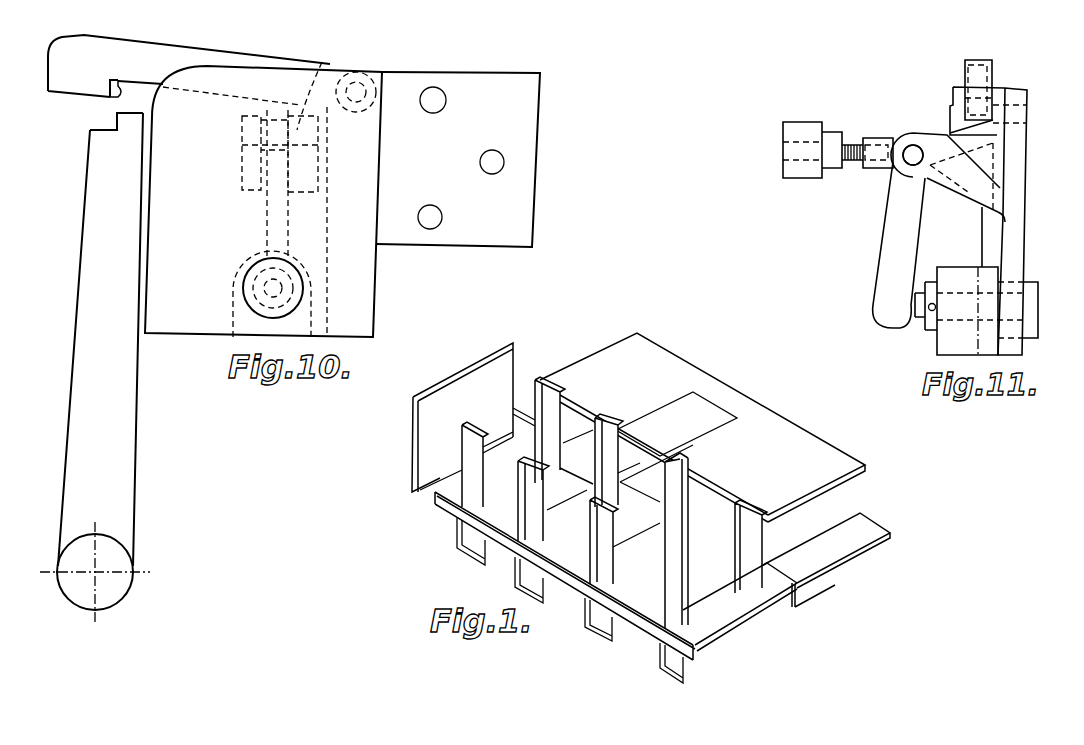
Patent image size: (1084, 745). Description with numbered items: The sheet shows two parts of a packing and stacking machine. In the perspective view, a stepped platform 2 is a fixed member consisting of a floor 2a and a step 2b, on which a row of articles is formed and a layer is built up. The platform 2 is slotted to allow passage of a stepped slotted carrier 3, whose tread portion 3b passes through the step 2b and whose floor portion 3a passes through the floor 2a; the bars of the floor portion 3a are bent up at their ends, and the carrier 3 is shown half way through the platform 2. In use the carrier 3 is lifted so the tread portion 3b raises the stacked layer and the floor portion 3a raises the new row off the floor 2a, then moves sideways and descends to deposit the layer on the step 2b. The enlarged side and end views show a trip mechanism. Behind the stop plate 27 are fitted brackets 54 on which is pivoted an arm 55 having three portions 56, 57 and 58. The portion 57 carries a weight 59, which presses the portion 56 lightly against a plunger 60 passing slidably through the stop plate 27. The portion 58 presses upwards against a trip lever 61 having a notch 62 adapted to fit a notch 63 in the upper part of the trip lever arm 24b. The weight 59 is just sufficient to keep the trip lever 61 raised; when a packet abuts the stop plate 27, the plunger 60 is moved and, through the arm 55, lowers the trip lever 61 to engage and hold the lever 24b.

In FIG. 10, the trip lever 61 is at (166, 53).
In FIG. 11, the trip lever 61 is at (993, 61).
In FIG. 10, the notch 62 is at (110, 96).
In FIG. 10, the notch 63 is at (113, 128).
In FIG. 10, the stop plate 27 is at (375, 290).
In FIG. 11, the stop plate 27 is at (1026, 152).
In FIG. 1, the stop plate 27 is at (468, 368).
In FIG. 10, the portion of arm 58 is at (330, 70).
In FIG. 11, the portion of arm 58 is at (1023, 183).
In FIG. 10, the brackets 54 is at (242, 190).
In FIG. 11, the brackets 54 is at (955, 190).
In FIG. 10, the portion of arm 56 is at (267, 226).
In FIG. 11, the portion of arm 56 is at (880, 268).
In FIG. 10, the plunger 60 is at (243, 285).
In FIG. 11, the plunger 60 is at (957, 310).
In FIG. 10, the trip lever arm 24b is at (122, 401).
In FIG. 11, the portion of arm 57 is at (873, 137).
In FIG. 11, the arm 55 is at (887, 168).
In FIG. 11, the weight 59 is at (803, 172).
In FIG. 1, the stepped slotted carrier 3 is at (537, 380).
In FIG. 1, the tread portion 3b is at (607, 353).
In FIG. 1, the floor portion 3a is at (715, 657).
In FIG. 1, the stepped platform 2 is at (797, 610).
In FIG. 1, the floor 2a is at (753, 613).
In FIG. 1, the step 2b is at (840, 547).